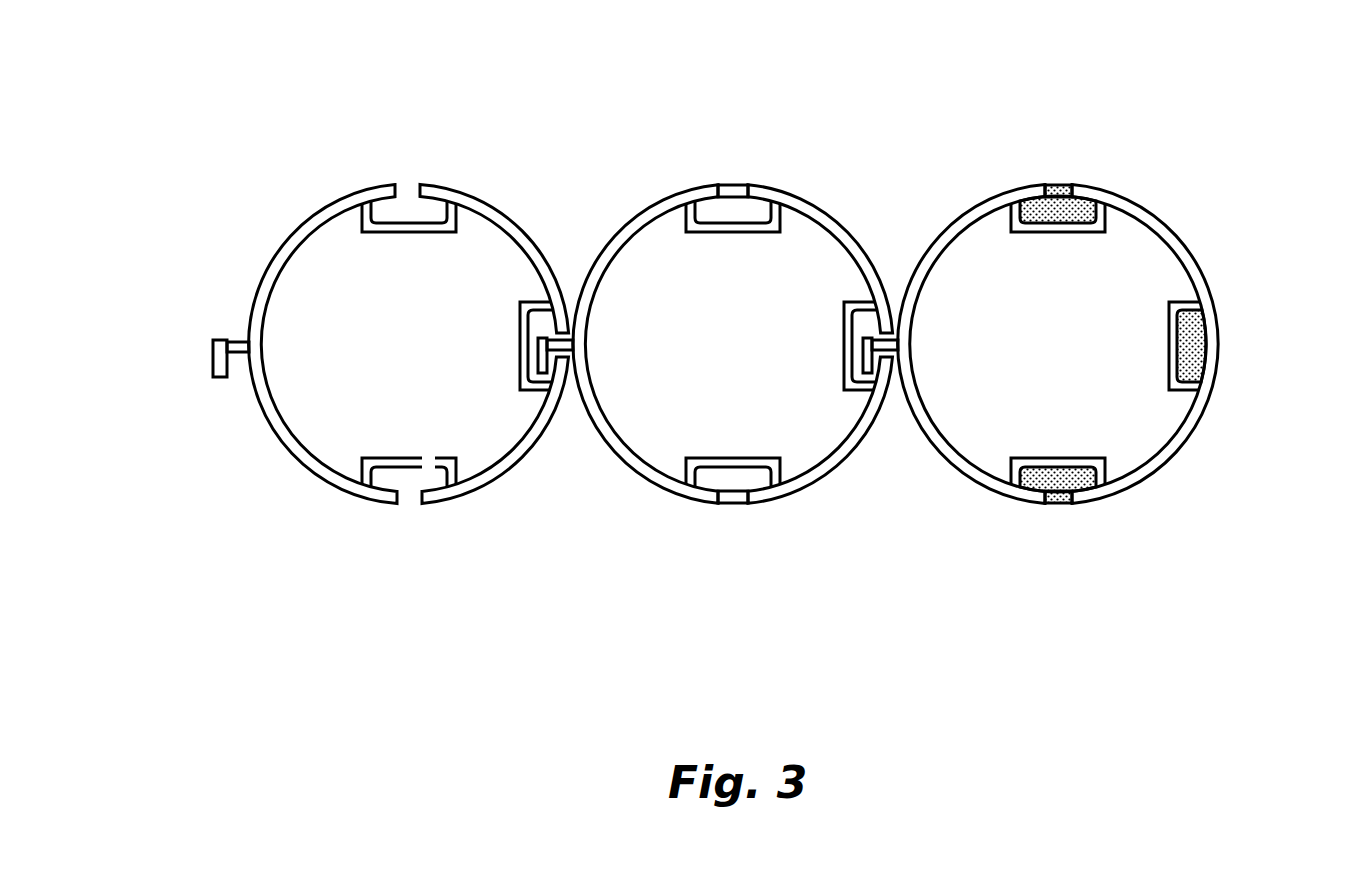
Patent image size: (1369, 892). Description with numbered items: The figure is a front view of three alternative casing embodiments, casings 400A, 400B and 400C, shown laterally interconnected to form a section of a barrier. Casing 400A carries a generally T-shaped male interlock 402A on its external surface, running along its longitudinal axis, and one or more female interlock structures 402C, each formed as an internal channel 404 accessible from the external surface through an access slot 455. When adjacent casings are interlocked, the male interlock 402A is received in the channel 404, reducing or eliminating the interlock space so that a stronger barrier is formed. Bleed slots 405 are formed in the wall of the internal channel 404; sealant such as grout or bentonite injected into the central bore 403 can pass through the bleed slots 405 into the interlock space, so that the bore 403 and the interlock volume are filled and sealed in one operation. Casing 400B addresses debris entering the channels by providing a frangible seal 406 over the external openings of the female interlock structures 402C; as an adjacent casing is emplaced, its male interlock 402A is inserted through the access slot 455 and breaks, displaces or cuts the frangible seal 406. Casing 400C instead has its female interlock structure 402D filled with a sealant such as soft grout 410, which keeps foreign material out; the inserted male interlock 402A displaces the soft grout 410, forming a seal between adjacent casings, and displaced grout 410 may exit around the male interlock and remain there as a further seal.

The casing 400A is at (365, 348).
The casing 400B is at (730, 367).
The casing 400C is at (1094, 367).
The male interlock 402A is at (188, 322).
The female interlock structure 402C is at (421, 190).
The female interlock structure 402D is at (1091, 195).
The central bore 403 is at (318, 305).
The internal channel 404 is at (456, 229).
The bleed slots 405 is at (427, 463).
The frangible seal 406 is at (734, 178).
The soft grout 410 is at (1092, 214).
The access slot 455 is at (409, 187).